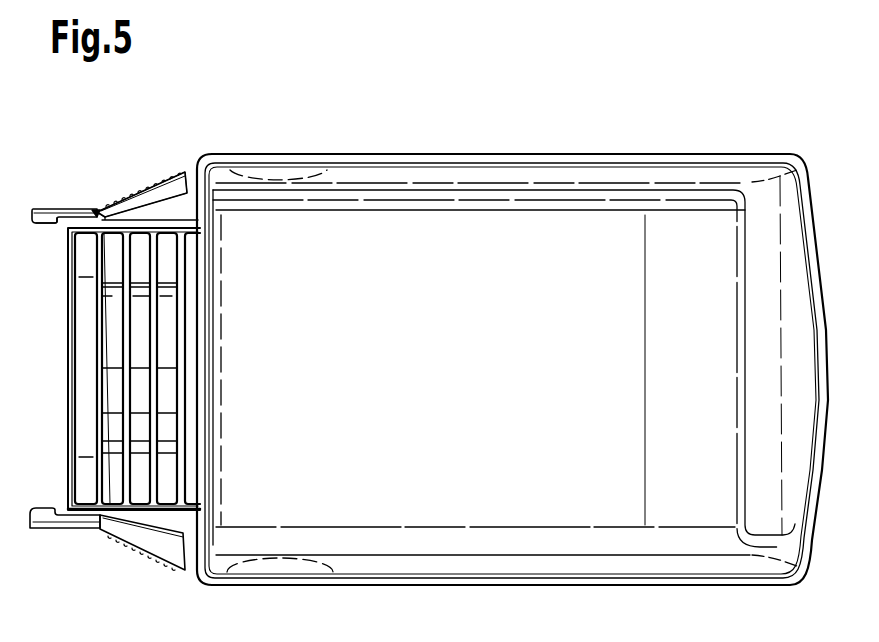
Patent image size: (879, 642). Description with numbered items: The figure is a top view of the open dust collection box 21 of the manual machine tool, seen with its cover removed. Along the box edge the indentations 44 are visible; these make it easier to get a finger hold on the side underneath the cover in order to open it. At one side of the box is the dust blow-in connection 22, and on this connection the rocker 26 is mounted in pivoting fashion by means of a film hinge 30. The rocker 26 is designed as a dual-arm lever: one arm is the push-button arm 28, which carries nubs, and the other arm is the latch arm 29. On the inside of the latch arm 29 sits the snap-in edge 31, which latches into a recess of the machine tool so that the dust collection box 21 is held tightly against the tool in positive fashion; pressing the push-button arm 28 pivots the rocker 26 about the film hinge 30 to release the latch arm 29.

The dust collection box 21 is at (636, 152).
The blow-in connection 22 is at (67, 388).
The rocker 26 is at (142, 172).
The push-button arm 28 is at (177, 171).
The latch arm 29 is at (45, 207).
The film hinge 30 is at (93, 209).
The snap-in edge 31 is at (57, 228).
The indentations 44 is at (284, 172).